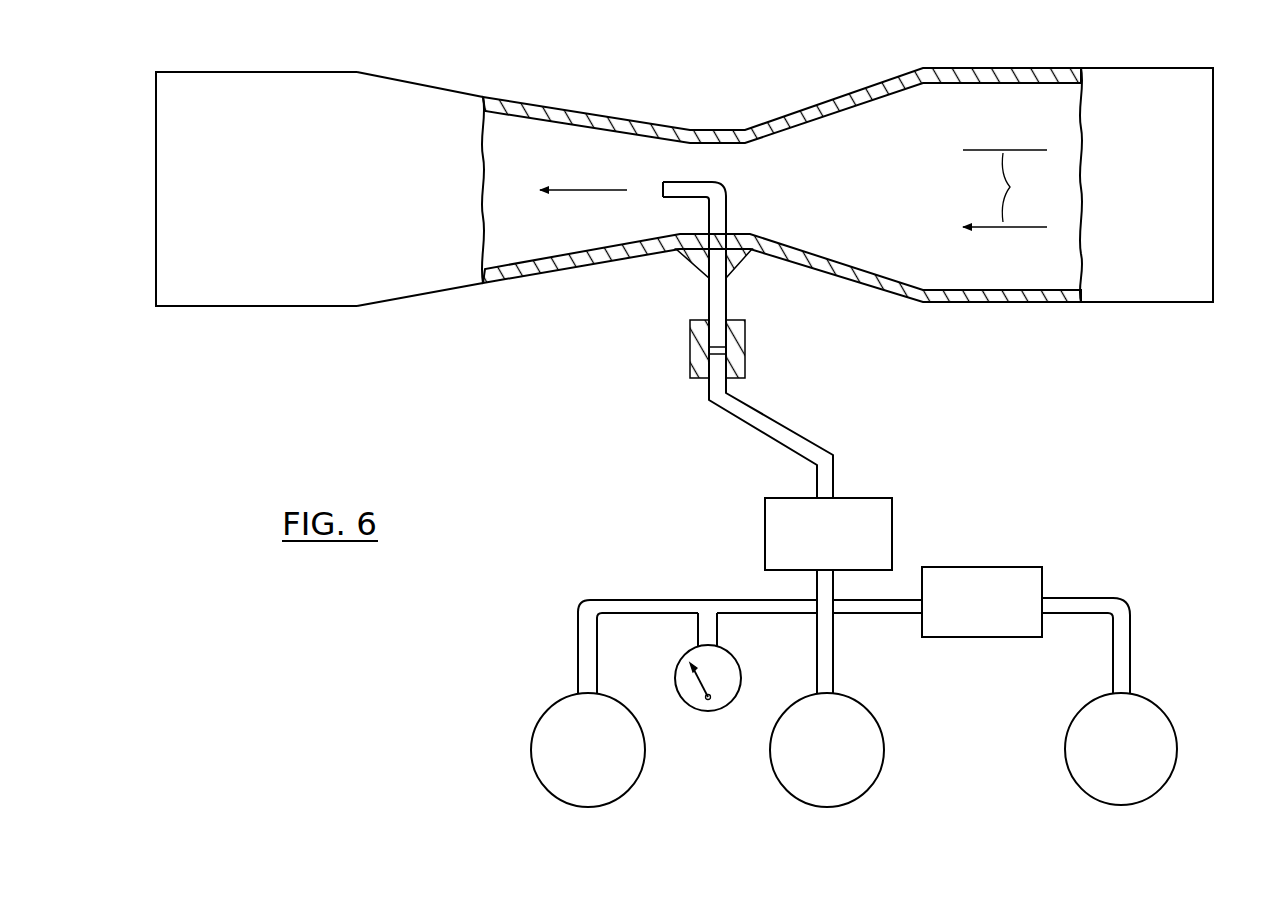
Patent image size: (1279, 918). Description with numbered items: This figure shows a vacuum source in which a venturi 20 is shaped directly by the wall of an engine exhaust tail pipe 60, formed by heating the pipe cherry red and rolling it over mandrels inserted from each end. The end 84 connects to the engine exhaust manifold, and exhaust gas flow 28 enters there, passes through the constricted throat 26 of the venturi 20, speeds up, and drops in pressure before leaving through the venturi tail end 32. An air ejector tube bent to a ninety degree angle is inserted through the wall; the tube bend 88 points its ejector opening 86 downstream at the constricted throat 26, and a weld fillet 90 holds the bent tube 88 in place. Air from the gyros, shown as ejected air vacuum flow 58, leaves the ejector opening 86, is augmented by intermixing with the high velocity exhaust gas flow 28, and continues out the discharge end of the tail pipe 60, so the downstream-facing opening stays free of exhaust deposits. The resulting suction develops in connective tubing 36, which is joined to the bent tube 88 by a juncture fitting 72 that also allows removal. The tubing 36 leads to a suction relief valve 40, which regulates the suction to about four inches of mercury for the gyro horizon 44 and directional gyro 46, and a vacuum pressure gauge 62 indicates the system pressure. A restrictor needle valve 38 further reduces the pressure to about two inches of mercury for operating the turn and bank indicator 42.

The venturi 20 is at (580, 272).
The constricted throat 26 is at (708, 158).
The exhaust gas flow 28 is at (1005, 188).
The venturi tail end 32 is at (153, 89).
The connective tubing 36 is at (835, 458).
The restrictor needle valve 38 is at (986, 567).
The suction relief valve 40 is at (767, 498).
The turn and bank indicator 42 is at (1081, 712).
The gyro horizon 44 is at (872, 710).
The directional gyro 46 is at (545, 712).
The ejected air vacuum flow 58 is at (596, 190).
The exhaust tail pipe 60 is at (292, 72).
The vacuum pressure gauge 62 is at (742, 665).
The juncture fitting 72 is at (690, 348).
The end 84 is at (1216, 82).
The ejector opening 86 is at (660, 184).
The bent ejector tube 88 is at (728, 187).
The weld fillet 90 is at (692, 264).